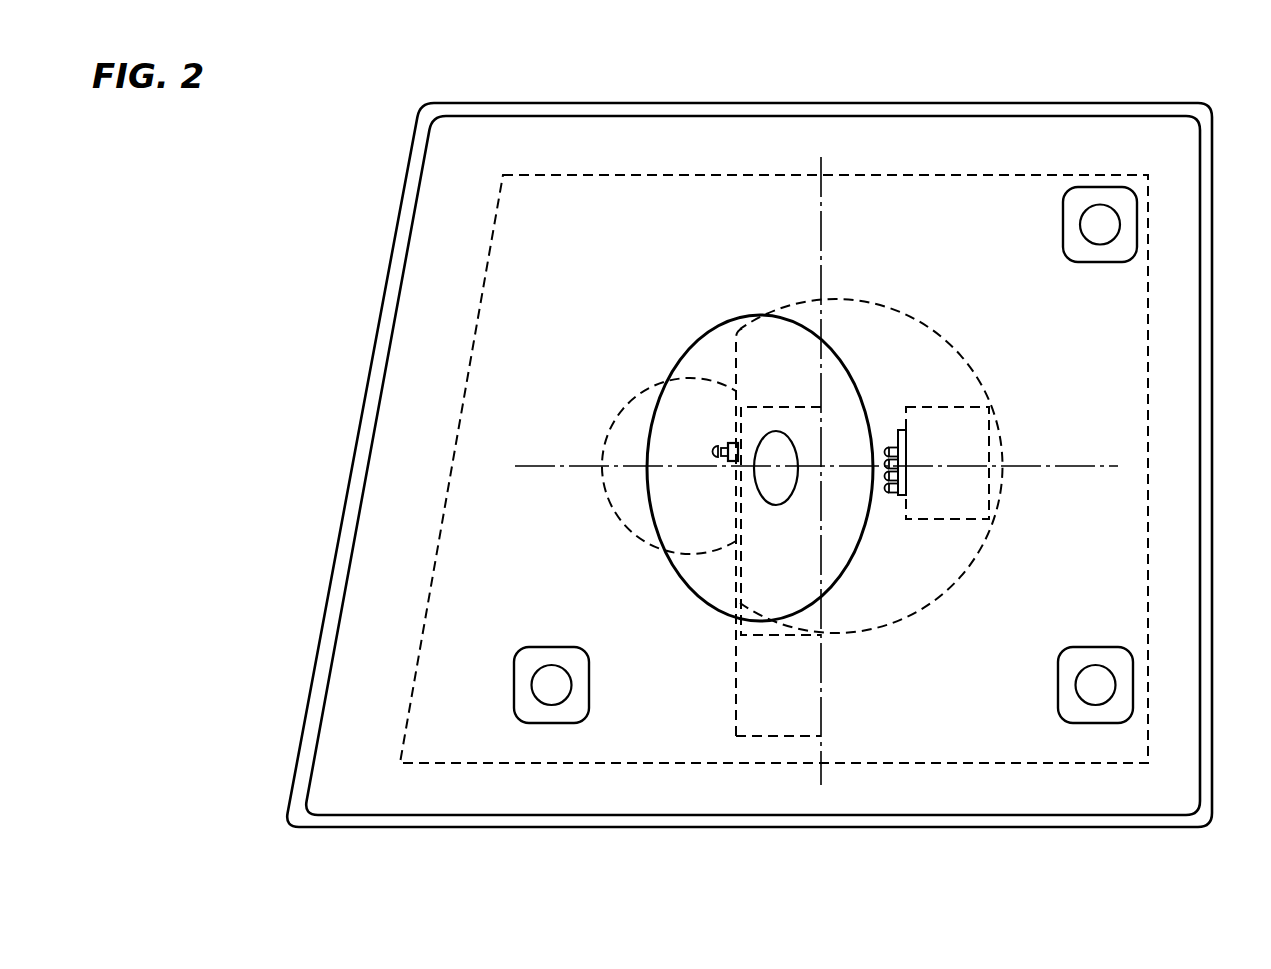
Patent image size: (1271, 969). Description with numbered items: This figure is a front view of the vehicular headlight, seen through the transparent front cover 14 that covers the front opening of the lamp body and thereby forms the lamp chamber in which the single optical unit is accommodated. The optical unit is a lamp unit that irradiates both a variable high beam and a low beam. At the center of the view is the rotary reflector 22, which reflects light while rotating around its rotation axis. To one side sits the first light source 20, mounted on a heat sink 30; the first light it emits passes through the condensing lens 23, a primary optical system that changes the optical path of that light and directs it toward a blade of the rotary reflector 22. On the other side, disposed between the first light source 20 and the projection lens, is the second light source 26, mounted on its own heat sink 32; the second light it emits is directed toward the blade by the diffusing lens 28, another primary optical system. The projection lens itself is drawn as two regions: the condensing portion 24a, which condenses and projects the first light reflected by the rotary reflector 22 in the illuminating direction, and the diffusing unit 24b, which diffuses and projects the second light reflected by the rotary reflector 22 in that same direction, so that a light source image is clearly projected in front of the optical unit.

The front cover 14 is at (1097, 828).
The first light source 20 is at (889, 457).
The rotary reflector 22 is at (722, 318).
The condensing lens 23 is at (881, 447).
The condensing portion 24a is at (942, 339).
The diffusing unit 24b is at (612, 424).
The second light source 26 is at (715, 428).
The diffusing lens 28 is at (713, 451).
The heat sink 30 is at (955, 407).
The heat sink 32 is at (788, 407).